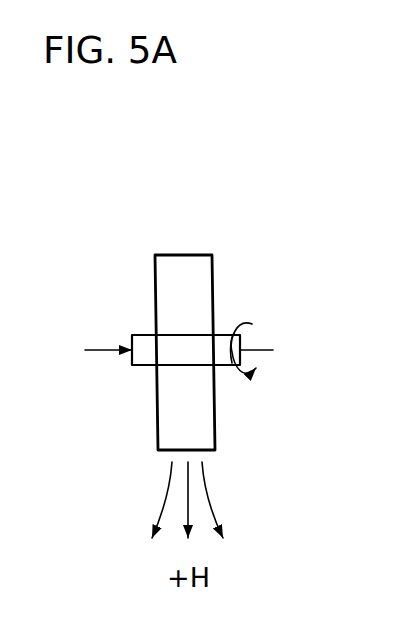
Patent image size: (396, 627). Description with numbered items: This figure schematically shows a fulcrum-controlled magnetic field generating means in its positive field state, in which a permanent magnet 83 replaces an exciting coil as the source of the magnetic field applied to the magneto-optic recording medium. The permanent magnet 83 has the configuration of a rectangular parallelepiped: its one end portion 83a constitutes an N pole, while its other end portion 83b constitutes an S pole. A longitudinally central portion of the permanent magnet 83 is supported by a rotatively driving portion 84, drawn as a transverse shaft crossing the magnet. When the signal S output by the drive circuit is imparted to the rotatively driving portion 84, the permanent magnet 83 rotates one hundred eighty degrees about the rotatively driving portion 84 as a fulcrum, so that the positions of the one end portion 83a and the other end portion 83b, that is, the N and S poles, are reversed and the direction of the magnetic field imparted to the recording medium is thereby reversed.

The permanent magnet 83 is at (204, 283).
The other end portion 83b is at (161, 256).
The one end portion 83a is at (208, 433).
The rotatively driving portion 84 is at (148, 342).
The signal S is at (100, 340).